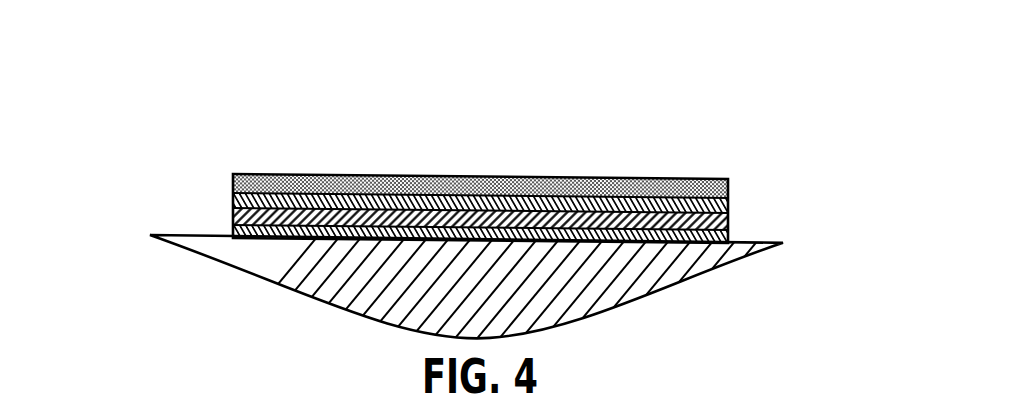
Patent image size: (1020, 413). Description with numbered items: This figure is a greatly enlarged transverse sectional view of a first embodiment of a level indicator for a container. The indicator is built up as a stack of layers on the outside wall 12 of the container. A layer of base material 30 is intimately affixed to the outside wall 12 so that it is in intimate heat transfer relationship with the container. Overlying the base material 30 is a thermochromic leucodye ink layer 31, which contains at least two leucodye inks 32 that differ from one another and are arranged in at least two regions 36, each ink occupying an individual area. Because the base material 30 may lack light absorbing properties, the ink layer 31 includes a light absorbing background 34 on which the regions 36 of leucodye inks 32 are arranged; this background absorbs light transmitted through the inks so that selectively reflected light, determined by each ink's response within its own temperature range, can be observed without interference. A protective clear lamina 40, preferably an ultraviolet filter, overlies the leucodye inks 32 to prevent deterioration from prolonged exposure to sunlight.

The outside wall 12 is at (748, 243).
The base material 30 is at (230, 228).
The thermochromic leucodye ink layer 31 is at (103, 117).
The leucodye inks 32 is at (230, 198).
The light absorbing background 34 is at (230, 215).
The regions 36 is at (590, 165).
The protective clear lamina 40 is at (730, 188).